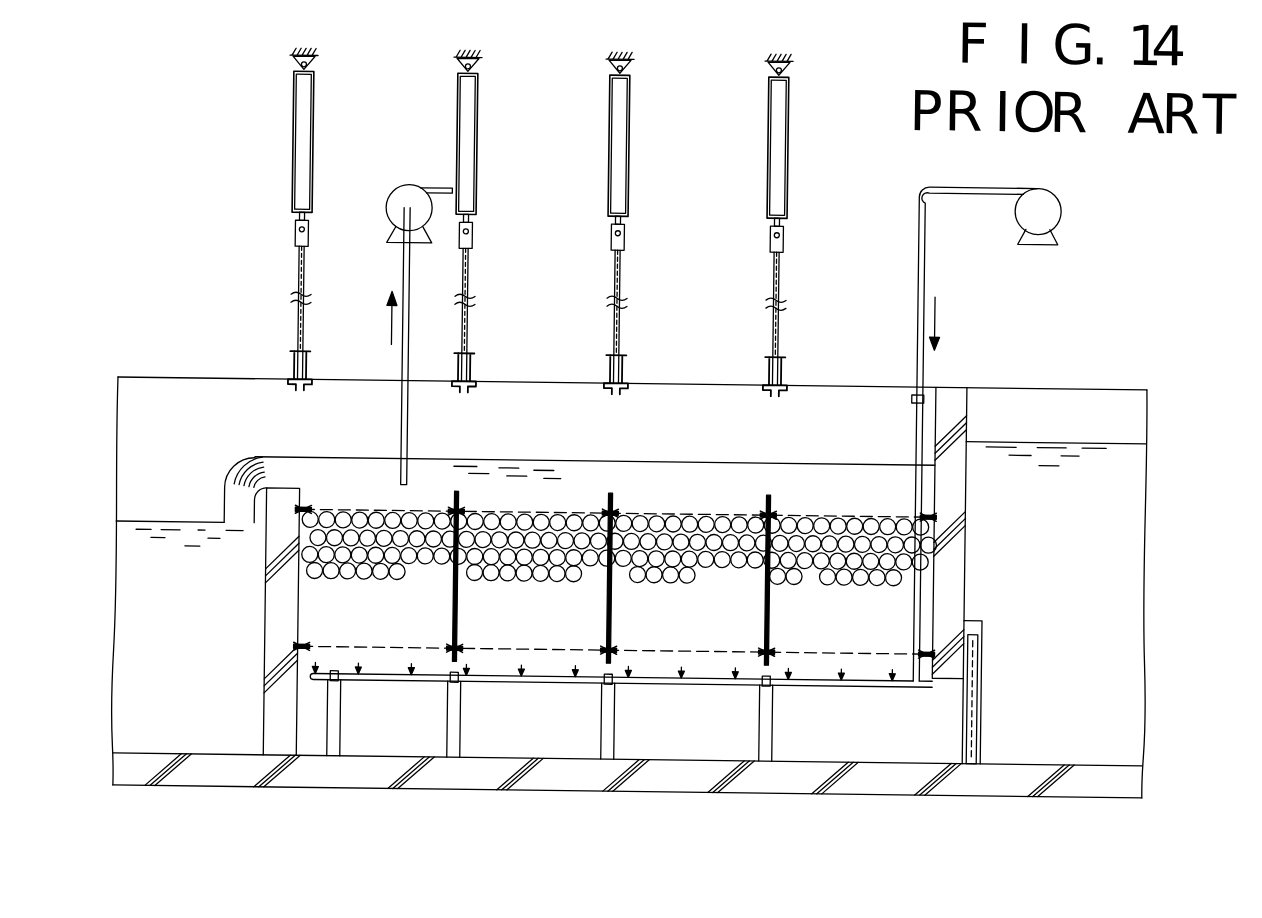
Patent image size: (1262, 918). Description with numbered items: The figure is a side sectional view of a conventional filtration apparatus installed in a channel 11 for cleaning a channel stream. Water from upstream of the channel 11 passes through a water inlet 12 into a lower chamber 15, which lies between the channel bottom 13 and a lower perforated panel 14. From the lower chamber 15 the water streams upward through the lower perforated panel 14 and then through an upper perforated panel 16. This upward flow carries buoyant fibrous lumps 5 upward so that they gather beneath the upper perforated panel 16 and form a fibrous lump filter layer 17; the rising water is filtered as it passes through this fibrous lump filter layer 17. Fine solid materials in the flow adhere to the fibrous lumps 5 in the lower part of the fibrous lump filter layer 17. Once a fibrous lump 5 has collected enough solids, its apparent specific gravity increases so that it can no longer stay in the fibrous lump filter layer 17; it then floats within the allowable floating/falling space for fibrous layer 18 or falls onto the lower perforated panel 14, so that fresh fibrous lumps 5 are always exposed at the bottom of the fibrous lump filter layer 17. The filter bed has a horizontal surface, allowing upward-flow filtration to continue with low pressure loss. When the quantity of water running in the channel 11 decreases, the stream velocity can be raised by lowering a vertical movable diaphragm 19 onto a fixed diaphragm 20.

The fibrous lumps 5 is at (414, 576).
The channel 11 is at (1145, 751).
The water inlet 12 is at (930, 742).
The channel bottom 13 is at (1008, 776).
The lower perforated panel 14 is at (395, 644).
The lower chamber 15 is at (670, 740).
The upper perforated panel 16 is at (342, 506).
The fibrous lump filter layer 17 is at (571, 583).
The allowable floating/falling space for fibrous layer 18 is at (312, 612).
The vertical movable diaphragm 19 is at (469, 280).
The fixed diaphragm 20 is at (456, 487).